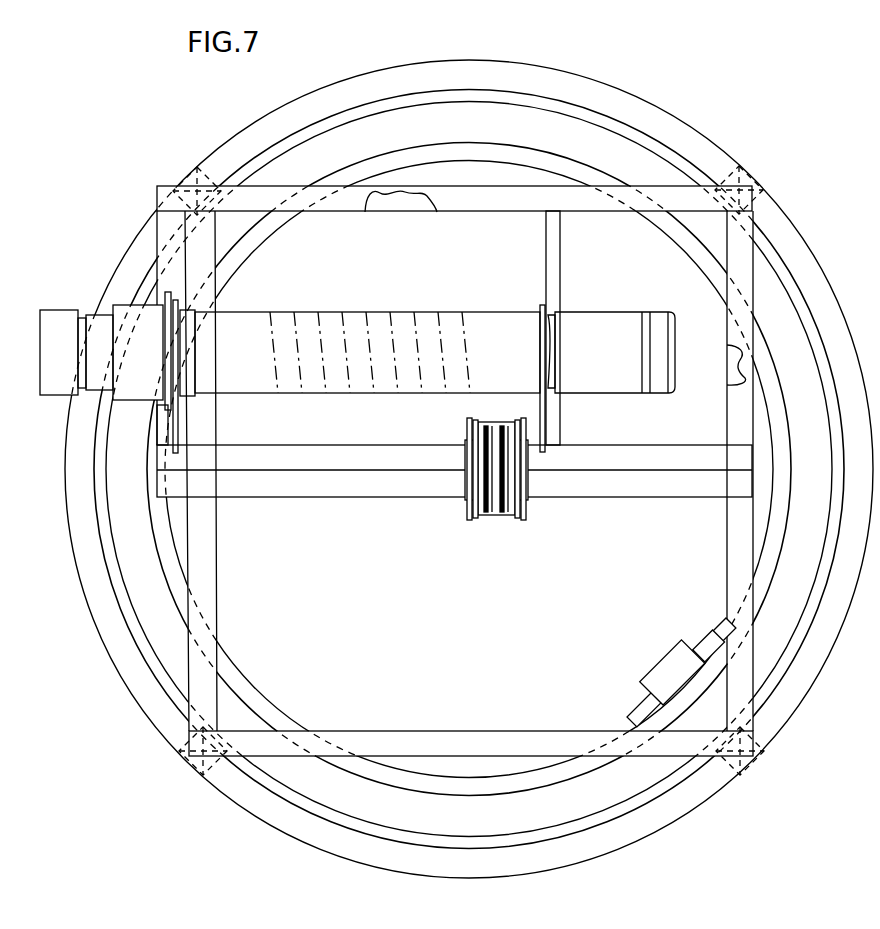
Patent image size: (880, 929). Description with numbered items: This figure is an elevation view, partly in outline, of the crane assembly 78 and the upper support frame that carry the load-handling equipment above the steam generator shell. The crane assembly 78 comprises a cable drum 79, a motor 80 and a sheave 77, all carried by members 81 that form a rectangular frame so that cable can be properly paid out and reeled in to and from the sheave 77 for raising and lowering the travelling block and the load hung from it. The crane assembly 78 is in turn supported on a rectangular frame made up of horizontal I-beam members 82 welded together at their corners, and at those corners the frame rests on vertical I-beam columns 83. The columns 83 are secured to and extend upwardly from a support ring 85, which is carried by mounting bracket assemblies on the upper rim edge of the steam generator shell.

The sheave 77 is at (466, 507).
The crane assembly 78 is at (486, 412).
The cable drum 79 is at (386, 321).
The motor 80 is at (612, 318).
The members 81 is at (278, 191).
The horizontal I-beam members 82 is at (405, 213).
The vertical I-beam columns 83 is at (197, 170).
The support ring 85 is at (107, 650).